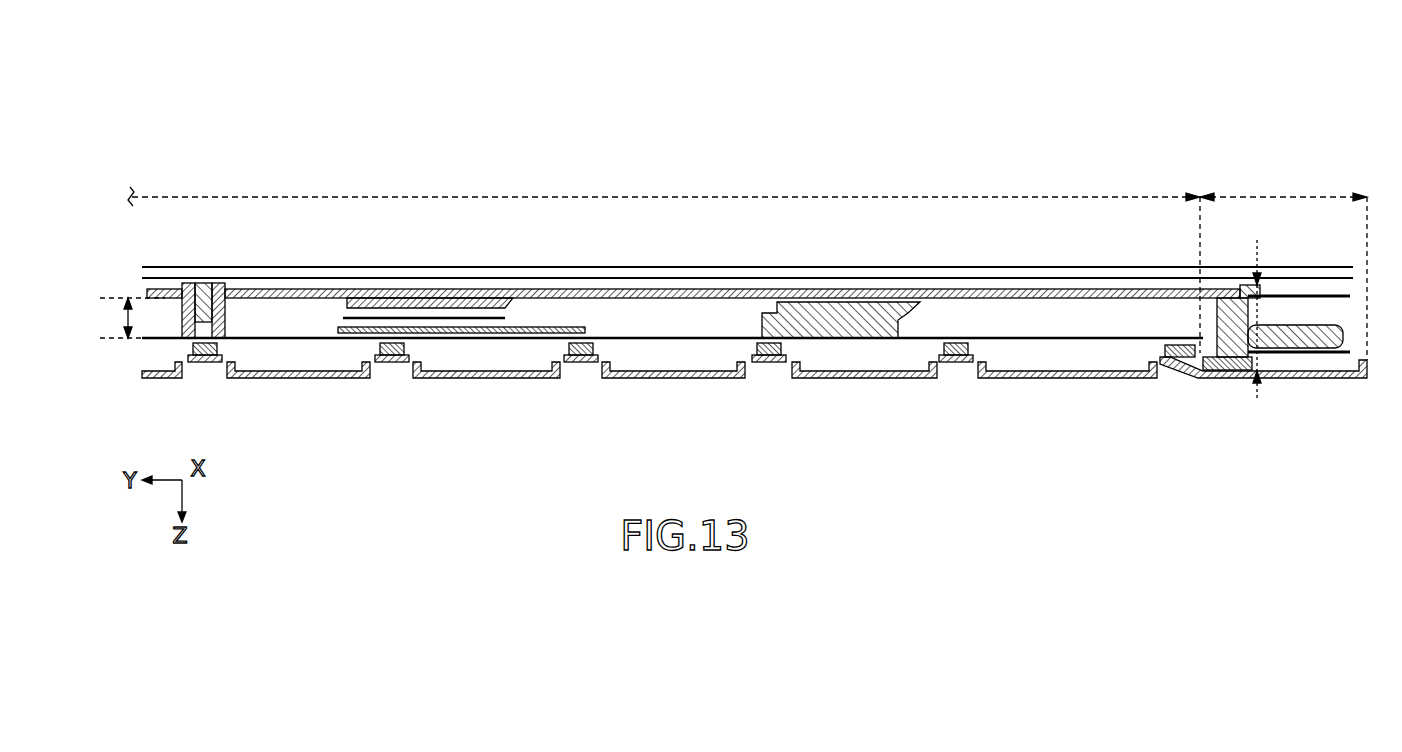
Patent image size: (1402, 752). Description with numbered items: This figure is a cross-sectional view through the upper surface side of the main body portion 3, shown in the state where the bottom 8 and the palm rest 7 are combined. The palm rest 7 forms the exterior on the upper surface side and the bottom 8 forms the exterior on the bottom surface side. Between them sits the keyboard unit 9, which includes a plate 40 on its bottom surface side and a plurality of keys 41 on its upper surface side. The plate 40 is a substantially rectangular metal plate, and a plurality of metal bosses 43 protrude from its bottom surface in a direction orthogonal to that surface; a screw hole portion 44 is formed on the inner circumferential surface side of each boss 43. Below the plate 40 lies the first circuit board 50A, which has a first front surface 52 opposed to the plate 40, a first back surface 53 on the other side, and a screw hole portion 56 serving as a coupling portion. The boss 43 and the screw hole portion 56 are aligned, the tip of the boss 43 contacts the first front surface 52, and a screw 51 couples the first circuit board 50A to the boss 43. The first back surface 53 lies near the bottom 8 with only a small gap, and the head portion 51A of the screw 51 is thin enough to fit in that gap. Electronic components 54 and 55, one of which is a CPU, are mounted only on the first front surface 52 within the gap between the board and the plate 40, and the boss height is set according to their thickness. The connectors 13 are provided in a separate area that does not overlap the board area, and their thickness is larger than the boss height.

The main body portion 3 is at (790, 90).
The palm rest 7 is at (206, 364).
The bottom 8 is at (1077, 276).
The keyboard unit 9 is at (637, 402).
The connectors 13 is at (1297, 292).
The plate 40 is at (711, 336).
The keys 41 is at (297, 379).
The bosses 43 is at (182, 318).
The screw hole portion 44 is at (190, 345).
The first circuit board 50A is at (598, 278).
The screw 51 is at (199, 273).
The head portion 51A is at (226, 292).
The first front surface 52 is at (322, 307).
The first back surface 53 is at (322, 307).
The electronic component 54 is at (503, 287).
The electronic component 55 is at (932, 302).
The screw hole portion 56 is at (198, 290).